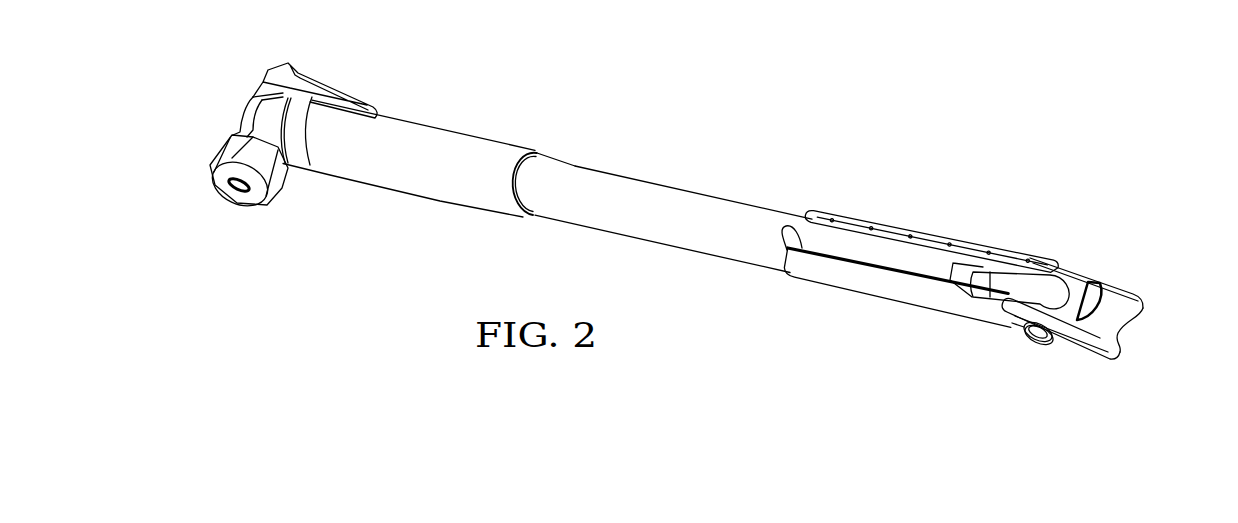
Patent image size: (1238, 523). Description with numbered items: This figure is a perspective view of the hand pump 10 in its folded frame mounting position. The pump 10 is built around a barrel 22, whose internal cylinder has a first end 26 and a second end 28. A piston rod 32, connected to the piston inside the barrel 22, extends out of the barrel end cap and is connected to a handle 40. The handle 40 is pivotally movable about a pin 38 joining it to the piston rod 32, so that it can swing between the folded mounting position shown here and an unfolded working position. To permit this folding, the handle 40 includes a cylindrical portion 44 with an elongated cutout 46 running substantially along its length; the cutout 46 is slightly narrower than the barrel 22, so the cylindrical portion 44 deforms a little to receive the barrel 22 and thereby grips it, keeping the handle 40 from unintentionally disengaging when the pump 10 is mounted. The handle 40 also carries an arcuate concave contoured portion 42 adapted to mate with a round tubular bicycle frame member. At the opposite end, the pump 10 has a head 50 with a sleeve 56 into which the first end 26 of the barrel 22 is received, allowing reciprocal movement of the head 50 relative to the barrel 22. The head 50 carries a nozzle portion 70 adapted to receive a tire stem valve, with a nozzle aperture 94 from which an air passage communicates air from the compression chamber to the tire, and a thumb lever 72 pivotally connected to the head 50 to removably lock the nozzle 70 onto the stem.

The pump 10 is at (740, 126).
The barrel 22 is at (660, 192).
The first end 26 is at (540, 218).
The second end 28 is at (962, 238).
The piston rod 32 is at (978, 276).
The pin 38 is at (1035, 340).
The handle 40 is at (1103, 254).
The contoured portion 42 is at (1132, 337).
The cylindrical portion 44 is at (837, 270).
The elongated cutout 46 is at (790, 228).
The head 50 is at (240, 104).
The sleeve 56 is at (420, 133).
The nozzle portion 70 is at (222, 148).
The thumb lever 72 is at (323, 85).
The nozzle aperture 94 is at (238, 192).